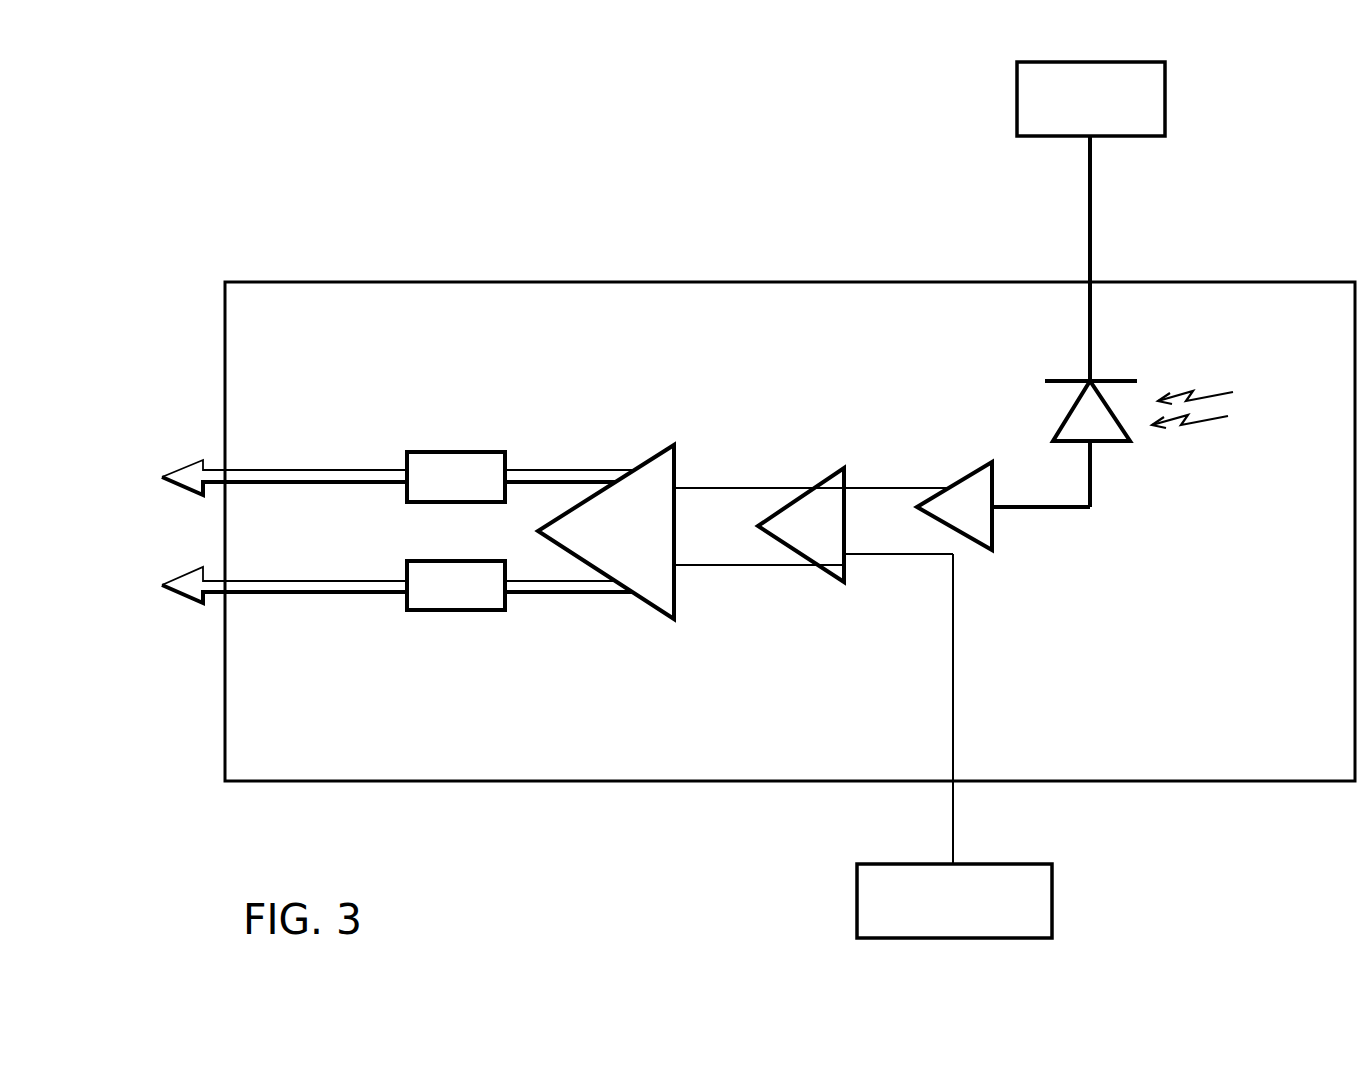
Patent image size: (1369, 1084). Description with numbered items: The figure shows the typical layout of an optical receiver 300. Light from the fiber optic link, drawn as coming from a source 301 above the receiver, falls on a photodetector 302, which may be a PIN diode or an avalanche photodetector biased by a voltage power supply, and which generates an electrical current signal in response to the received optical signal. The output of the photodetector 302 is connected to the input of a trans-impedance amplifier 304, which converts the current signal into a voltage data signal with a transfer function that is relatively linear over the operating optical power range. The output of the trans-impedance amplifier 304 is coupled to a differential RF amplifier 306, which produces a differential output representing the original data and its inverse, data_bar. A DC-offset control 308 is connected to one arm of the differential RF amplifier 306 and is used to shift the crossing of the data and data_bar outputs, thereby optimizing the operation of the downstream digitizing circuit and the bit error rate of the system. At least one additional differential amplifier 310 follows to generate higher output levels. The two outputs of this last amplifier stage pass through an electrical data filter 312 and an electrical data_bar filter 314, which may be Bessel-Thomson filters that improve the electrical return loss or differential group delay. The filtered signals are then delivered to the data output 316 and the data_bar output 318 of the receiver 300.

The optical receiver 300 is at (757, 164).
The light source 301 is at (1166, 88).
The photodetector 302 is at (1090, 381).
The trans-impedance amplifier 304 is at (963, 475).
The differential RF amplifier 306 is at (828, 477).
The DC-offset control 308 is at (997, 864).
The additional differential amplifier 310 is at (657, 456).
The electrical data filter 312 is at (472, 561).
The electrical data_bar filter 314 is at (472, 452).
The data output 316 is at (222, 468).
The data_bar output 318 is at (222, 597).